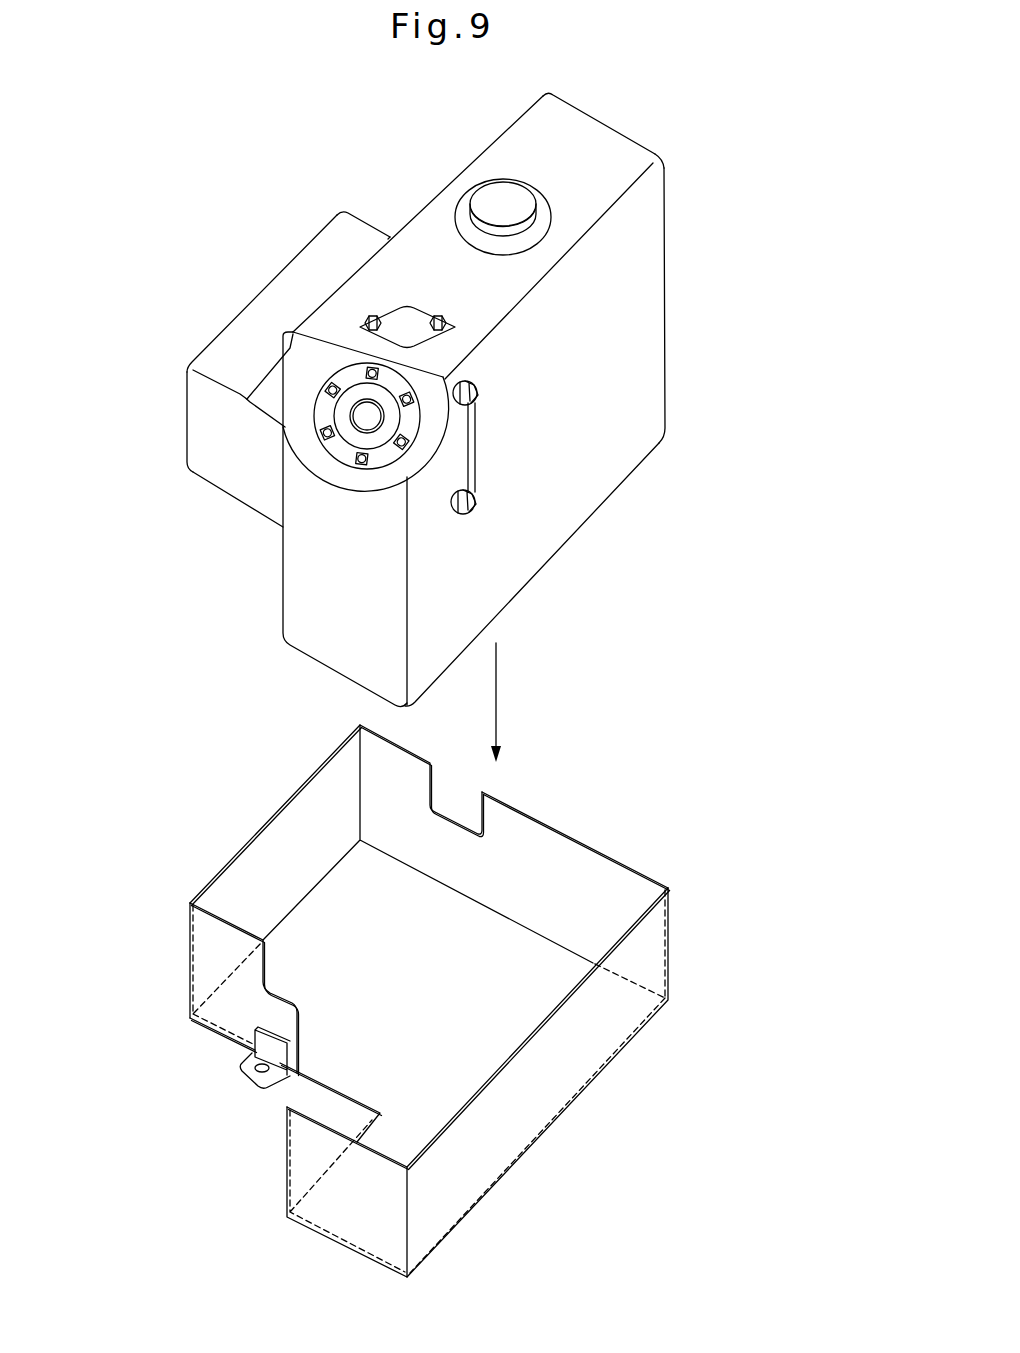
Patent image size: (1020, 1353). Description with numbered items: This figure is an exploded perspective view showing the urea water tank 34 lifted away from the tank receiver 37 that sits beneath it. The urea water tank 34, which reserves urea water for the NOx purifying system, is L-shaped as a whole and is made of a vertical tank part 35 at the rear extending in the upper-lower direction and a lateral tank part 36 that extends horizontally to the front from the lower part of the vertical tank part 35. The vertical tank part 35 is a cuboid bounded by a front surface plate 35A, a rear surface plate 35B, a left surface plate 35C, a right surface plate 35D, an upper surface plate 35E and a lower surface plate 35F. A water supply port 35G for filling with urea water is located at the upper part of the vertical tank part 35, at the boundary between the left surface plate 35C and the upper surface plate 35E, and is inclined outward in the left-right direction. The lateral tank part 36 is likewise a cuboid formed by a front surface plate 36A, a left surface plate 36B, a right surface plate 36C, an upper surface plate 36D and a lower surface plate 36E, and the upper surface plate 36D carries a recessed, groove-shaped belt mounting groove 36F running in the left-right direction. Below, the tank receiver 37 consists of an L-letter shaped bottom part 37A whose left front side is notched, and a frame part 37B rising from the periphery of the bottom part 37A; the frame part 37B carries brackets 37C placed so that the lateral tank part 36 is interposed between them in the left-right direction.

The urea water tank 34 is at (714, 216).
The vertical tank part 35 is at (612, 328).
The front surface plate 35A is at (456, 167).
The rear surface plate 35B is at (623, 383).
The left surface plate 35C is at (318, 615).
The right surface plate 35D is at (637, 138).
The upper surface plate 35E is at (572, 173).
The lower surface plate 35F is at (533, 577).
The water supply port 35G is at (357, 432).
The lateral tank part 36 is at (252, 280).
The front surface plate 36A is at (223, 332).
The left surface plate 36B is at (213, 440).
The right surface plate 36C is at (372, 224).
The upper surface plate 36D is at (347, 245).
The lower surface plate 36E is at (240, 507).
The belt mounting groove 36F is at (273, 397).
The tank receiver 37 is at (600, 1055).
The bottom part 37A is at (372, 912).
The frame part 37B is at (593, 847).
The brackets 37C is at (250, 1057).